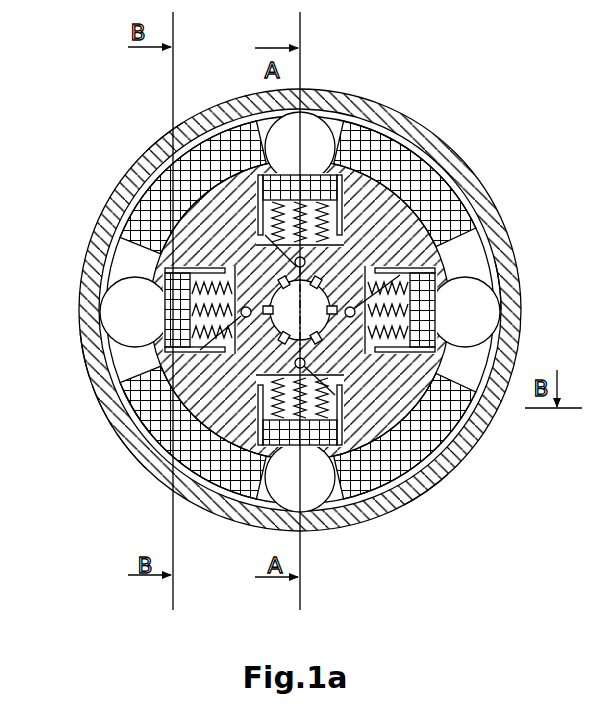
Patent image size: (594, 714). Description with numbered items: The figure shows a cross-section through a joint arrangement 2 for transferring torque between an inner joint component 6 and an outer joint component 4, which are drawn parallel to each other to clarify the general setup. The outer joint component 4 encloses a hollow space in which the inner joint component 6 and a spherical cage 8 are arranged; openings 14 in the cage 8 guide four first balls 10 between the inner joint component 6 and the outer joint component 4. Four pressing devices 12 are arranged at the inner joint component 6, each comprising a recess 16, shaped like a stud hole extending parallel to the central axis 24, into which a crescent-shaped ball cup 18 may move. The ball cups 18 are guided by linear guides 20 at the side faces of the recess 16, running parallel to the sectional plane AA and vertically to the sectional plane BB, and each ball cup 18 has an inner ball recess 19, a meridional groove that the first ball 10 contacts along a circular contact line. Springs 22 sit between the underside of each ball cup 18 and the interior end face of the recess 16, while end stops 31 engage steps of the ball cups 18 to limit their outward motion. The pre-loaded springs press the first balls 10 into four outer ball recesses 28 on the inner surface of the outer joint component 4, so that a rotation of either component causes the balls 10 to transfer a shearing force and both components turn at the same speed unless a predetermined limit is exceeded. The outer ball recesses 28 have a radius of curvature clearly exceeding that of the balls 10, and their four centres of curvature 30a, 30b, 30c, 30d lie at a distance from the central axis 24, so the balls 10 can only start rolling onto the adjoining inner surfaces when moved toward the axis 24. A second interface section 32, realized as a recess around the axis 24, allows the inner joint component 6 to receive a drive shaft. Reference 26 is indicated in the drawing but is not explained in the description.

The joint arrangement 2 is at (88, 116).
The outer joint component 4 is at (393, 128).
The inner joint component 6 is at (137, 234).
The spherical cage 8 is at (440, 153).
The first balls 10 is at (235, 112).
The pressing devices 12 is at (478, 440).
The openings 14 is at (268, 478).
The recess 16 is at (178, 152).
The ball cups 18 is at (100, 352).
The inner ball recess 19 is at (163, 312).
The linear guides 20 is at (132, 430).
The springs 22 is at (85, 380).
The central axis 24 is at (475, 322).
The housing wall portion 26 is at (172, 132).
The outer ball recesses 28 is at (298, 124).
The centre of curvature 30a is at (110, 272).
The centre of curvature 30b is at (440, 227).
The centre of curvature 30c is at (497, 283).
The centre of curvature 30d is at (390, 508).
The end stops 31 is at (108, 398).
The second interface section 32 is at (162, 452).